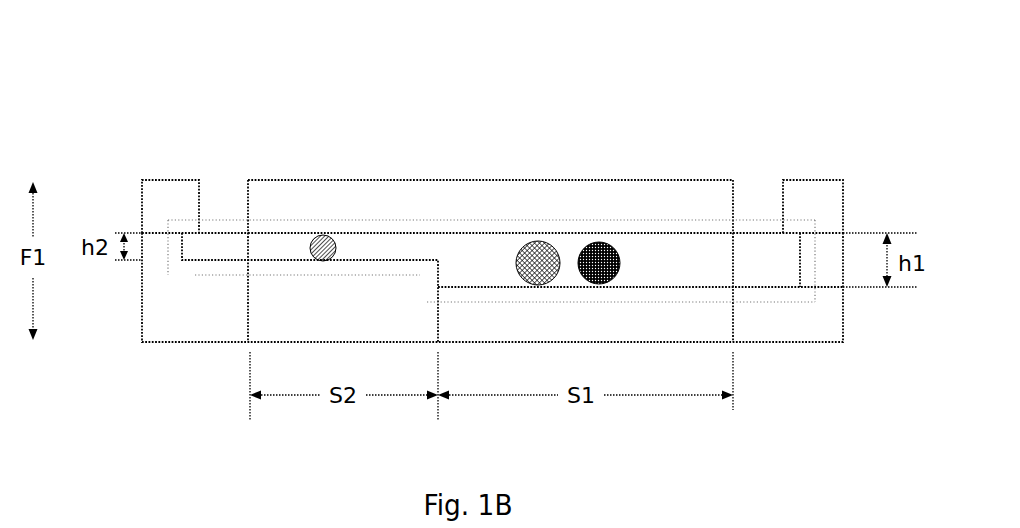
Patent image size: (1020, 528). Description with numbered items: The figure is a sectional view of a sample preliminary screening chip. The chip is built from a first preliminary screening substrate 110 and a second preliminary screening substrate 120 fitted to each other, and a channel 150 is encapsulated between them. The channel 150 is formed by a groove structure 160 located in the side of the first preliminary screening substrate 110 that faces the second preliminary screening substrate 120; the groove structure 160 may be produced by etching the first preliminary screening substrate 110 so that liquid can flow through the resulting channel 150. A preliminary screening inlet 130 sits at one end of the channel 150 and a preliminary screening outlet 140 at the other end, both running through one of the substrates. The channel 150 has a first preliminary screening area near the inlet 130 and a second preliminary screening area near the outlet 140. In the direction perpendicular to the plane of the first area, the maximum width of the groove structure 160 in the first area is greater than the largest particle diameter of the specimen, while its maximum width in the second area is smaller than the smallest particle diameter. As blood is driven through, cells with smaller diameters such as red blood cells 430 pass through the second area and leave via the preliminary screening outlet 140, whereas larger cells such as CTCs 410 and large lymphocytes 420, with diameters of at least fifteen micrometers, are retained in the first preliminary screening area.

The first preliminary screening substrate 110 is at (810, 320).
The second preliminary screening substrate 120 is at (813, 207).
The preliminary screening inlet 130 is at (750, 200).
The preliminary screening outlet 140 is at (222, 200).
The channel 150 is at (473, 242).
The groove structure 160 is at (385, 220).
The CTCs 410 is at (538, 241).
The large lymphocytes 420 is at (600, 241).
The red blood cells 430 is at (323, 236).